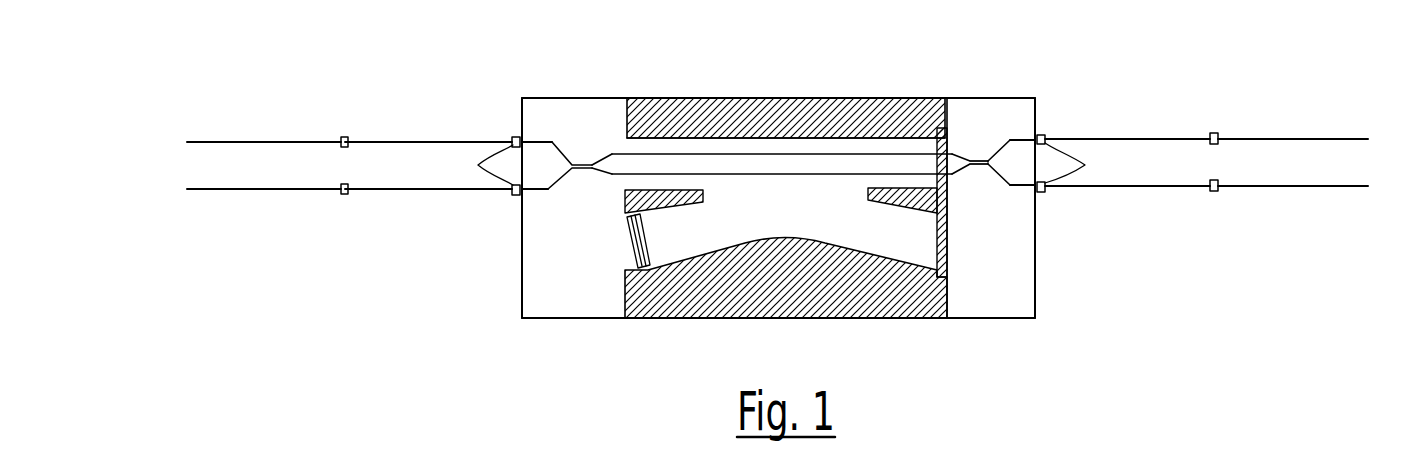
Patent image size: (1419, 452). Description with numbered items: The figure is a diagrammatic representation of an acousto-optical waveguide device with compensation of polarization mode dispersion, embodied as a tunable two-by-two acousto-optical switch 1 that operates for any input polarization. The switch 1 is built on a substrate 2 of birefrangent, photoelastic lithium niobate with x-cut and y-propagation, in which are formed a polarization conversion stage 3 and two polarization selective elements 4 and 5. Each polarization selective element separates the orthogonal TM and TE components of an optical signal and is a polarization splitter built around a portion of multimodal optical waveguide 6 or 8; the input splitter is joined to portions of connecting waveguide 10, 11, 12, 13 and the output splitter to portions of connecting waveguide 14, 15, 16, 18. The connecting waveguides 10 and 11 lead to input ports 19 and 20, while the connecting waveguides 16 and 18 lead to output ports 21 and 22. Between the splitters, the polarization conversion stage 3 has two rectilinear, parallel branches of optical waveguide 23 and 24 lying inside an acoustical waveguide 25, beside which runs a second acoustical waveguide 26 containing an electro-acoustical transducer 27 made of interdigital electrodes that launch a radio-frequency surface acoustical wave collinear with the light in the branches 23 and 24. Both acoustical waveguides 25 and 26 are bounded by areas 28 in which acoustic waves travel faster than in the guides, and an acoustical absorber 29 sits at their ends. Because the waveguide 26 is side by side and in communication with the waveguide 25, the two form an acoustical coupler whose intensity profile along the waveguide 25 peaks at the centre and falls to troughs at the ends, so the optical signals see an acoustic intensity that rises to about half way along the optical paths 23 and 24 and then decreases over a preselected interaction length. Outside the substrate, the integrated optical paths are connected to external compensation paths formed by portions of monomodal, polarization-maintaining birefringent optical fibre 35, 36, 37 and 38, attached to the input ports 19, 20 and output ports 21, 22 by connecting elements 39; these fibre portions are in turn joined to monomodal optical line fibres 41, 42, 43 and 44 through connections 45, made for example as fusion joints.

The acousto-optical switch 1 is at (1022, 94).
The substrate 2 is at (543, 260).
The polarization conversion stage 3 is at (690, 96).
The polarization selective element 4 is at (574, 150).
The polarization selective element 5 is at (992, 148).
The portion of multimodal optical waveguide 6 is at (585, 165).
The portion of multimodal optical waveguide 8 is at (969, 160).
The portion of connecting waveguide 10 is at (540, 140).
The portion of connecting waveguide 11 is at (540, 190).
The portion of connecting waveguide 12 is at (603, 153).
The portion of connecting waveguide 13 is at (600, 170).
The portion of connecting waveguide 14 is at (965, 152).
The portion of connecting waveguide 15 is at (953, 180).
The portion of connecting waveguide 16 is at (1042, 125).
The portion of connecting waveguide 18 is at (1036, 246).
The input port 19 is at (512, 138).
The input port 20 is at (515, 197).
The output port 21 is at (1047, 133).
The output port 22 is at (1045, 192).
The branch of optical waveguide 23 is at (823, 152).
The branch of optical waveguide 24 is at (717, 172).
The acoustical waveguide 25 is at (853, 123).
The acoustical waveguide 26 is at (692, 240).
The electro-acoustical transducer 27 is at (632, 262).
The areas 28 is at (843, 147).
The acoustical absorber 29 is at (948, 268).
The portion of monomodal birefringent optical fibre 35 is at (393, 142).
The portion of monomodal birefringent optical fibre 36 is at (390, 190).
The portion of monomodal birefringent optical fibre 37 is at (1148, 138).
The portion of monomodal birefringent optical fibre 38 is at (1145, 186).
The connecting element 39 is at (781, 164).
The monomodal optical line fibre 41 is at (254, 142).
The monomodal optical line fibre 42 is at (262, 190).
The monomodal optical line fibre 43 is at (1290, 138).
The monomodal optical line fibre 44 is at (1287, 186).
The connection 45 is at (344, 137).